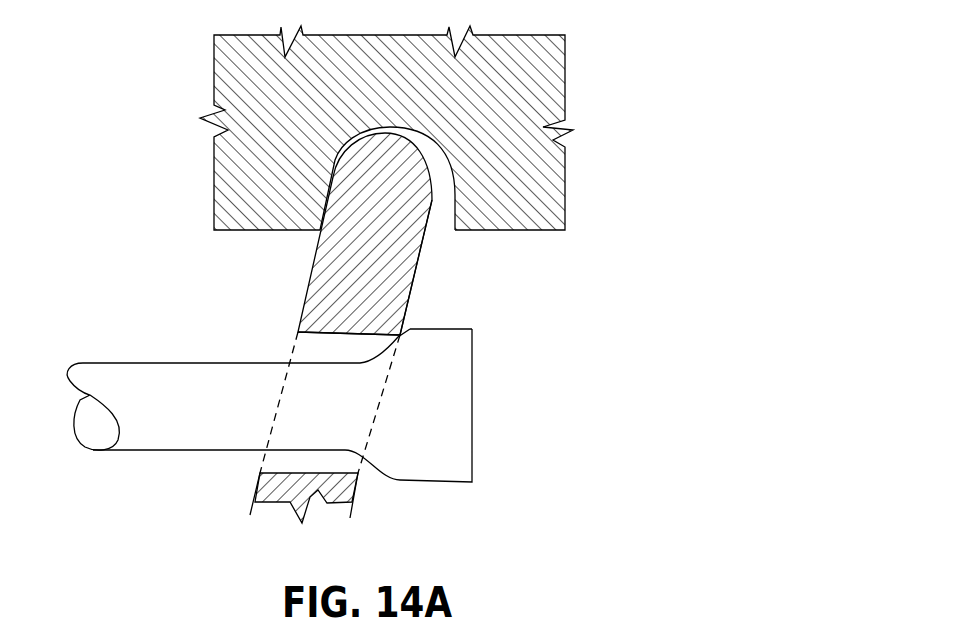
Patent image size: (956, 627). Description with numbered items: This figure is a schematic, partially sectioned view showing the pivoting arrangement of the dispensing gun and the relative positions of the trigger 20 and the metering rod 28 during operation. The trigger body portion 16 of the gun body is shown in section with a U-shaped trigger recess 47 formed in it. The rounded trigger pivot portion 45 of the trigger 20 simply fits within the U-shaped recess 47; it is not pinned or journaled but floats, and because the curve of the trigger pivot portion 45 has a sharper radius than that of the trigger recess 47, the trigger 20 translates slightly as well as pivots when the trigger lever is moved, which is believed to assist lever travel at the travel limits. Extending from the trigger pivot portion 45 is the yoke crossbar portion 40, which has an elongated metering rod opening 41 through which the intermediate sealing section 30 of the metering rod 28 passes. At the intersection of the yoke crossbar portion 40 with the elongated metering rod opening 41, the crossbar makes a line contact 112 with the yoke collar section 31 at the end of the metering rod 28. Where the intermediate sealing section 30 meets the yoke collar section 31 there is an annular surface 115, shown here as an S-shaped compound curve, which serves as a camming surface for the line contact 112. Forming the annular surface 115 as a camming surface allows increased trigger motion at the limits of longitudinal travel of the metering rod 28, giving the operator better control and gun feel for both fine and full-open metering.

The trigger body portion 16 is at (565, 100).
The trigger 20 is at (290, 278).
The metering rod 28 is at (87, 470).
The intermediate sealing section 30 is at (220, 452).
The yoke collar section 31 is at (453, 482).
The yoke crossbar portion 40 is at (403, 320).
The elongated metering rod opening 41 is at (331, 354).
The trigger pivot portion 45 is at (410, 297).
The U-shaped trigger recess 47 is at (450, 228).
The line contact 112 is at (397, 337).
The annular surface 115 is at (383, 475).